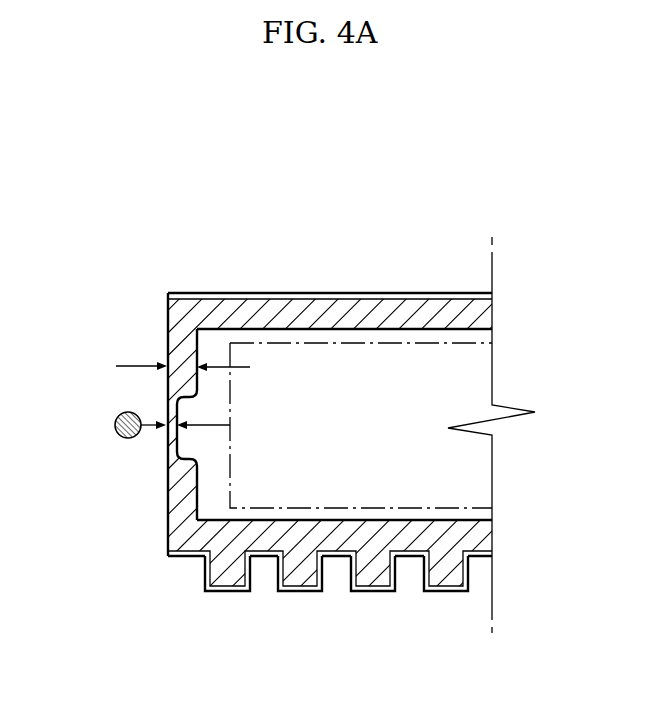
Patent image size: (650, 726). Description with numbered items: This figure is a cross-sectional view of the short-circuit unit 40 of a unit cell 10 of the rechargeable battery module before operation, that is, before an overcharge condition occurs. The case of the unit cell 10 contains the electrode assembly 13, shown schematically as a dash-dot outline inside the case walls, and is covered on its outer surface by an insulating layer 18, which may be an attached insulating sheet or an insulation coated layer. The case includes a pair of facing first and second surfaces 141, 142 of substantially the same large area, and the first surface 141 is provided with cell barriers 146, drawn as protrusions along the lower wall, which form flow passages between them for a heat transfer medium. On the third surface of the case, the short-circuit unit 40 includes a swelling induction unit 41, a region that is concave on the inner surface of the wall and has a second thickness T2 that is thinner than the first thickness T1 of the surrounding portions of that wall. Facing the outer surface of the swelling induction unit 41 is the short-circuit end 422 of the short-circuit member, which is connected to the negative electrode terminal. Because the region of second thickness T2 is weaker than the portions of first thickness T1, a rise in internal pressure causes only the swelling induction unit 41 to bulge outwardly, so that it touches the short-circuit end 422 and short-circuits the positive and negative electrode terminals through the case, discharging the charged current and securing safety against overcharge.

The unit cell 10 is at (531, 470).
The electrode assembly 13 is at (482, 370).
The insulating layer 18 is at (292, 293).
The short-circuit unit 40 is at (80, 384).
The swelling induction unit 41 is at (190, 466).
The short-circuit end 422 is at (114, 425).
The first surface 141 is at (406, 533).
The second surface 142 is at (412, 318).
The cell barriers 146 is at (373, 581).
The first thickness T1 is at (170, 363).
The second thickness T2 is at (219, 425).